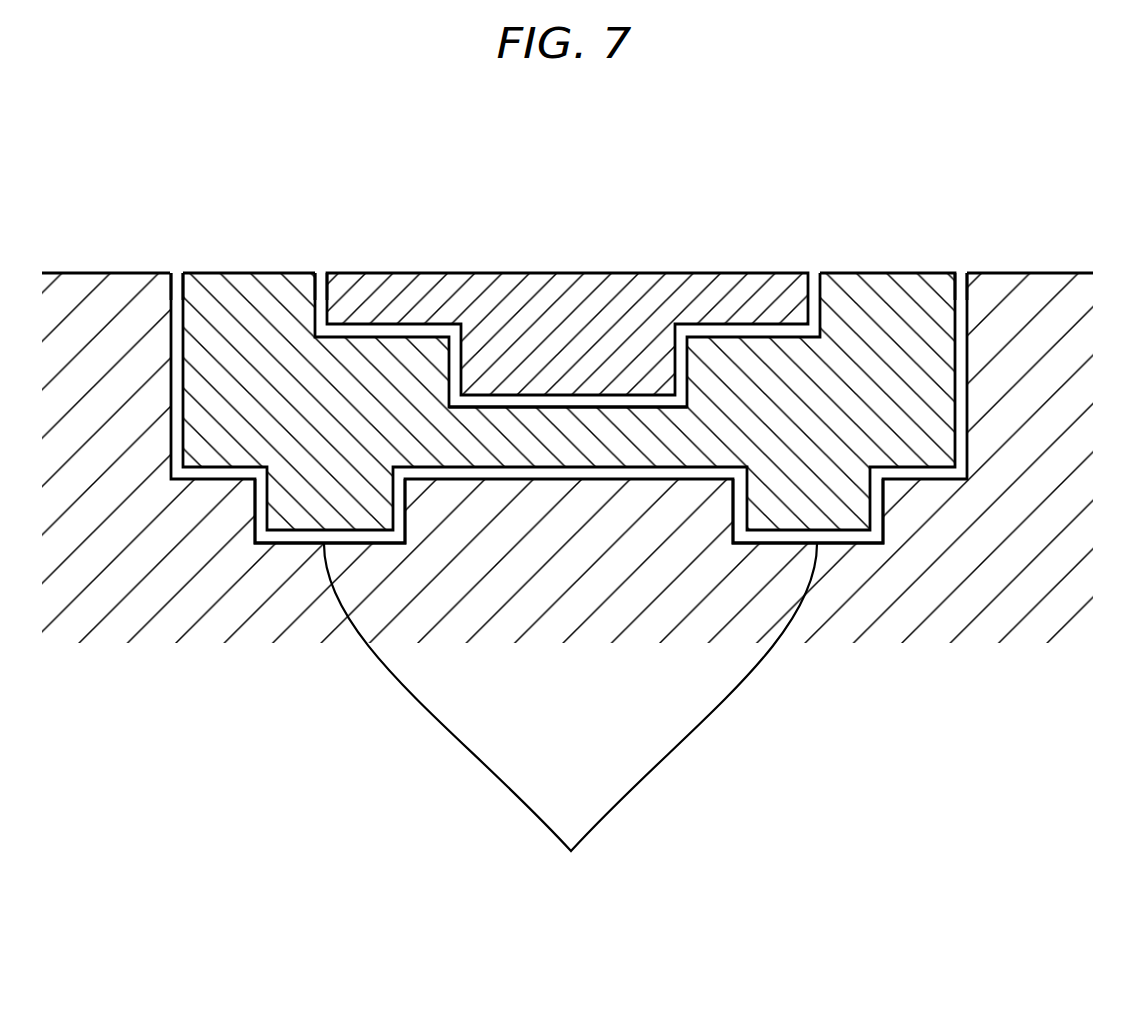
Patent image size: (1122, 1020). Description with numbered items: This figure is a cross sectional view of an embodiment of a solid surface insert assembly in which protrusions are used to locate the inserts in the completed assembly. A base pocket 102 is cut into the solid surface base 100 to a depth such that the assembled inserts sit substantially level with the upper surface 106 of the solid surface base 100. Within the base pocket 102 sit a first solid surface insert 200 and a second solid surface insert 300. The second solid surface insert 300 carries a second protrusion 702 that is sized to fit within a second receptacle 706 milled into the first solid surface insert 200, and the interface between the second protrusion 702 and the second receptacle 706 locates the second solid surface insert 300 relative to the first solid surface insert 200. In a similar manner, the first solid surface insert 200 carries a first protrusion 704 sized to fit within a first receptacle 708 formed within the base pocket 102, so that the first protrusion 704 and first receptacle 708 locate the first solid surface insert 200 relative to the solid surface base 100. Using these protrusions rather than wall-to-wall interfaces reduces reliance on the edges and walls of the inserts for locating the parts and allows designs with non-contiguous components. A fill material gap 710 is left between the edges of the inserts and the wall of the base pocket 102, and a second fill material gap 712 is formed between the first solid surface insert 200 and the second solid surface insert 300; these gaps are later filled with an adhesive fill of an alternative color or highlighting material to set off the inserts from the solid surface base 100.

The solid surface base 100 is at (1010, 570).
The base pocket 102 is at (202, 480).
The upper surface of the solid surface base 106 is at (1037, 273).
The first solid surface insert 200 is at (882, 300).
The second solid surface insert 300 is at (586, 283).
The second protrusion 702 is at (582, 395).
The first protrusion 704 is at (393, 498).
The second receptacle 706 is at (527, 410).
The first receptacle 708 is at (570, 722).
The fill material gap 710 is at (175, 286).
The second fill material gap 712 is at (319, 290).